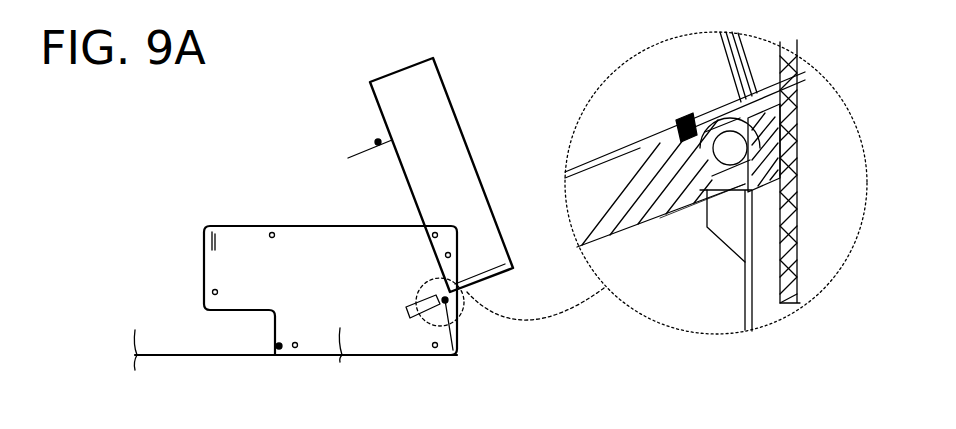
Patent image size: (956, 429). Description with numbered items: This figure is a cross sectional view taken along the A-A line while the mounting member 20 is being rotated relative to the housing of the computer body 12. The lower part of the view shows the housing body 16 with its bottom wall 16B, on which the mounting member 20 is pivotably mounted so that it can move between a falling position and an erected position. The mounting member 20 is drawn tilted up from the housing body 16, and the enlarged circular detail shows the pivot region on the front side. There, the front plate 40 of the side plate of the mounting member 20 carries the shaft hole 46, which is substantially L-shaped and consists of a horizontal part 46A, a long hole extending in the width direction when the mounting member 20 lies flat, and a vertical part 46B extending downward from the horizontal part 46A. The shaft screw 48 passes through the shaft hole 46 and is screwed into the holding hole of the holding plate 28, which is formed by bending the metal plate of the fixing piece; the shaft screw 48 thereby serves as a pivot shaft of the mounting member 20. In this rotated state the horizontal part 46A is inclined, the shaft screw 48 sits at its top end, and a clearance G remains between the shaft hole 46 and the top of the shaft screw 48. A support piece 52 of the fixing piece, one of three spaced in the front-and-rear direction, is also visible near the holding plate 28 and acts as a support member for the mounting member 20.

The computer body 12 is at (492, 139).
The housing body 16 is at (237, 357).
The bottom wall 16B is at (330, 307).
The mounting member 20 is at (450, 108).
The holding plate 28 is at (745, 306).
The front plate 40 is at (603, 163).
The shaft hole 46 is at (690, 118).
The horizontal part 46A is at (778, 140).
The vertical part 46B is at (798, 183).
The shaft screw 48 is at (684, 212).
The support piece 52 is at (724, 242).
The clearance G is at (795, 143).